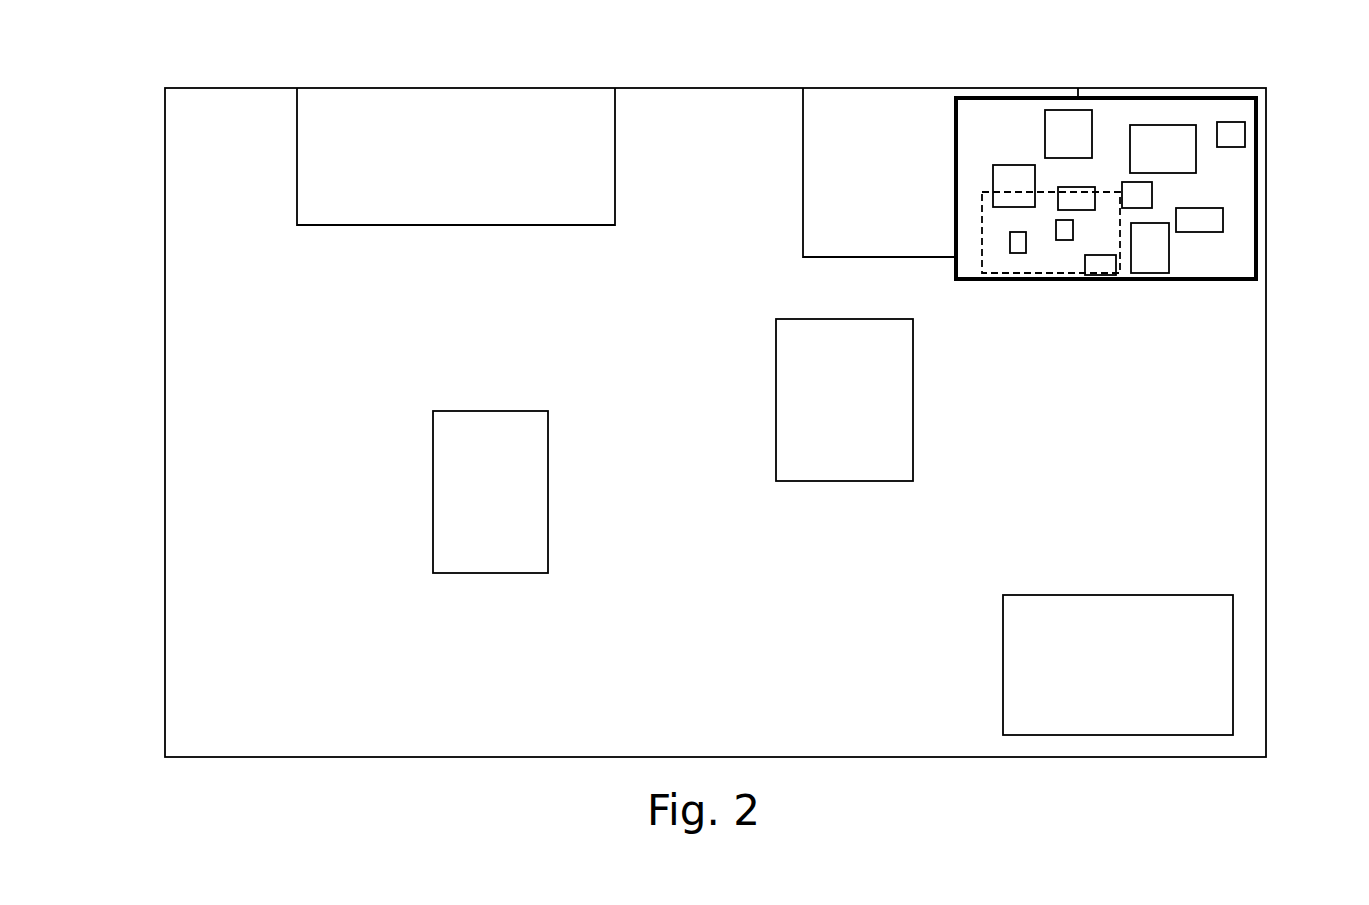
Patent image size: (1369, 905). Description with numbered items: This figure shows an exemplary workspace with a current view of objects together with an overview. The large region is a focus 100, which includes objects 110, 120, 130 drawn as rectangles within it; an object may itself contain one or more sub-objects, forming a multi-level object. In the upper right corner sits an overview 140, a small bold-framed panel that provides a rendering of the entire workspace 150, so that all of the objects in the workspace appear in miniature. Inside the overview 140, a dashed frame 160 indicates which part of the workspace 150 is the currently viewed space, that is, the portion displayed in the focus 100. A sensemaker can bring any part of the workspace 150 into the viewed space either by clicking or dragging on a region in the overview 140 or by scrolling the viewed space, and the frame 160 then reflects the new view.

The focus 100 is at (230, 97).
The object 110 is at (440, 512).
The object 120 is at (1212, 690).
The object 130 is at (891, 455).
The overview 140 is at (1157, 97).
The workspace 150 is at (988, 135).
The frame 160 is at (1042, 192).